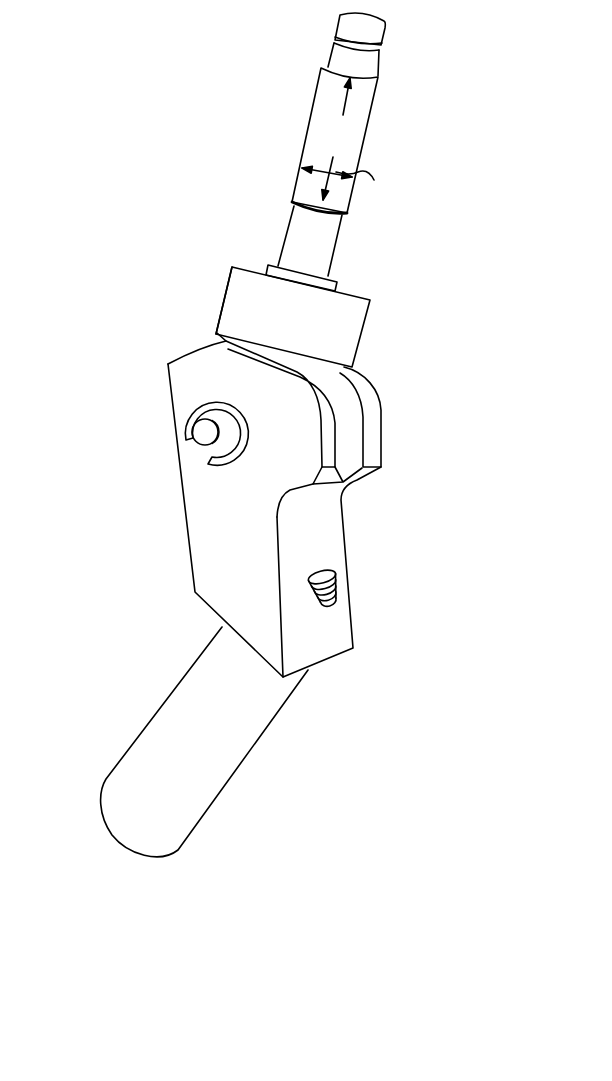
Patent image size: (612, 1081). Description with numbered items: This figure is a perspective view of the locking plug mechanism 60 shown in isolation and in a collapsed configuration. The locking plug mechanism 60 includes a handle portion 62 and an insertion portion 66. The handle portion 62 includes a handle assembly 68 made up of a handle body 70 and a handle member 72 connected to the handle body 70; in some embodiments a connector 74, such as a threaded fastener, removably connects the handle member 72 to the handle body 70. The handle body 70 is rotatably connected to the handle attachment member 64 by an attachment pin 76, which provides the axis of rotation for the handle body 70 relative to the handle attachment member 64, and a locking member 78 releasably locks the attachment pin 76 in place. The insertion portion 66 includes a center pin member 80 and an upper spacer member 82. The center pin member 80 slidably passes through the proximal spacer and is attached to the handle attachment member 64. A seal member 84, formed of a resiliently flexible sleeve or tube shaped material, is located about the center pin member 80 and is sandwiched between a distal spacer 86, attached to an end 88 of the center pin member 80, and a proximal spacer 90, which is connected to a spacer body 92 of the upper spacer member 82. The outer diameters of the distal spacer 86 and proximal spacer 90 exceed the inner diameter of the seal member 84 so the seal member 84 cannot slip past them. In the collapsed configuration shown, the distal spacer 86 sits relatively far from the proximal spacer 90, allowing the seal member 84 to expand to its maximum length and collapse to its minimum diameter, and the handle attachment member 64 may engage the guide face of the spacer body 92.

The locking plug mechanism 60 is at (380, 325).
The handle portion 62 is at (122, 658).
The handle attachment member 64 is at (305, 367).
The insertion portion 66 is at (205, 117).
The handle assembly 68 is at (142, 503).
The handle body 70 is at (207, 540).
The handle member 72 is at (248, 763).
The connector 74 is at (332, 575).
The attachment pin 76 is at (200, 442).
The locking member 78 is at (228, 463).
The center pin member 80 is at (423, 122).
The upper spacer member 82 is at (212, 277).
The seal member 84 is at (313, 98).
The distal spacer 86 is at (376, 36).
The end 88 is at (385, 75).
The proximal spacer 90 is at (332, 233).
The spacer body 92 is at (228, 317).